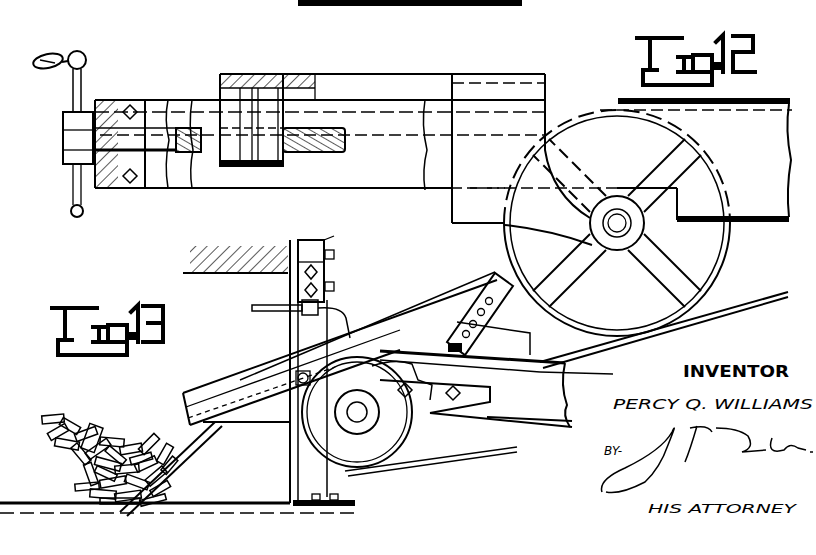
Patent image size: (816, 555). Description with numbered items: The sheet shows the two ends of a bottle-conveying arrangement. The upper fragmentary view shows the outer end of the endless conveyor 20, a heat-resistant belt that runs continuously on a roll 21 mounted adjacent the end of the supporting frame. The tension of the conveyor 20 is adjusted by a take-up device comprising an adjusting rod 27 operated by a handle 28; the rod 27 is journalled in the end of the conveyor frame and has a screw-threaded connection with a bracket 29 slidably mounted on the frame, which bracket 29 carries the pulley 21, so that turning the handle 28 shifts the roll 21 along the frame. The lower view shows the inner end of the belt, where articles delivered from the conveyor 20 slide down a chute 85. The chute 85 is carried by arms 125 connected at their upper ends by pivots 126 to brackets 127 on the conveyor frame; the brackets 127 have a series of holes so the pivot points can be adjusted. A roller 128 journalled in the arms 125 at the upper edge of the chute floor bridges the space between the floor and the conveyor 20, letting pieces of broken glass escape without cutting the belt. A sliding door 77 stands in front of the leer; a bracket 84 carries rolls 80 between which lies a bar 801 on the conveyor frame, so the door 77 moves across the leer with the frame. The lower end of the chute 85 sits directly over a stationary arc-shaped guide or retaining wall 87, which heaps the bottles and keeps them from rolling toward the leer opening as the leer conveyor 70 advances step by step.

In FIG. 12, the endless conveyor 20 is at (410, 6).
In FIG. 13, the endless conveyor 20 is at (470, 456).
In FIG. 12, the roll 21 is at (725, 255).
In FIG. 12, the adjusting rod 27 is at (152, 140).
In FIG. 12, the handle 28 is at (60, 60).
In FIG. 12, the bracket 29 is at (275, 82).
In FIG. 13, the leer conveyor 70 is at (78, 512).
In FIG. 13, the sliding door 77 is at (322, 480).
In FIG. 13, the rolls 80 is at (320, 306).
In FIG. 13, the bar 801 is at (262, 305).
In FIG. 13, the bracket 84 is at (313, 286).
In FIG. 13, the chute 85 is at (250, 376).
In FIG. 13, the arc-shaped guide or retaining wall 87 is at (180, 468).
In FIG. 13, the arms 125 is at (440, 302).
In FIG. 13, the pivots 126 is at (486, 283).
In FIG. 13, the brackets 127 is at (531, 340).
In FIG. 13, the roller 128 is at (285, 352).